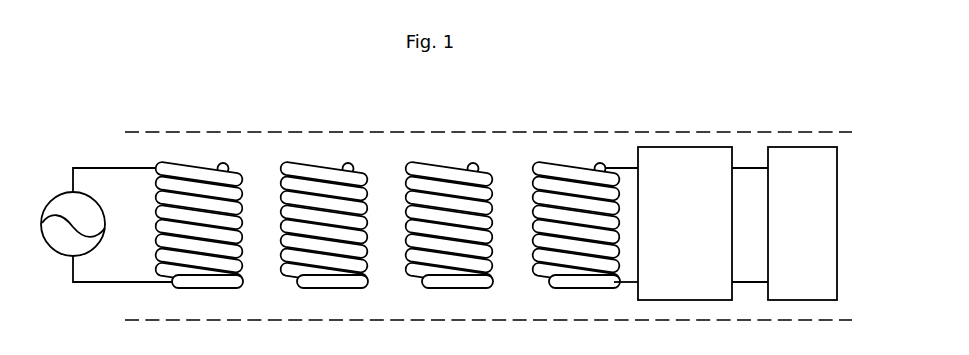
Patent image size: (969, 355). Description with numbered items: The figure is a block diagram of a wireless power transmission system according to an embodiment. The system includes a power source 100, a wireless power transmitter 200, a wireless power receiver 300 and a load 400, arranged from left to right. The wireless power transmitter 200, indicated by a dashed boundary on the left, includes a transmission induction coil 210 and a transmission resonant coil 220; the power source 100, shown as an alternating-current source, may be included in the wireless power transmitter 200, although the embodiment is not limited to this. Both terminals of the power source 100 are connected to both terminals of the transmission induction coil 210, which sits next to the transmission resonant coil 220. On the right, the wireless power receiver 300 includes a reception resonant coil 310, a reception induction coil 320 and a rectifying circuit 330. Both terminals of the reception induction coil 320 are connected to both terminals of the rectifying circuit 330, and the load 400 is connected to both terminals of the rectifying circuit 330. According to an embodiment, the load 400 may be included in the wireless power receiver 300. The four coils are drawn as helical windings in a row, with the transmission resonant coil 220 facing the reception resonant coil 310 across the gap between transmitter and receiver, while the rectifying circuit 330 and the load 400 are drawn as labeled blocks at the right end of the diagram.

The power source 100 is at (50, 199).
The wireless power transmitter 200 is at (146, 130).
The transmission induction coil 210 is at (211, 178).
The transmission resonant coil 220 is at (323, 178).
The wireless power receiver 300 is at (498, 130).
The reception resonant coil 310 is at (445, 173).
The reception induction coil 320 is at (583, 178).
The rectifying circuit 330 is at (680, 147).
The load 400 is at (801, 147).